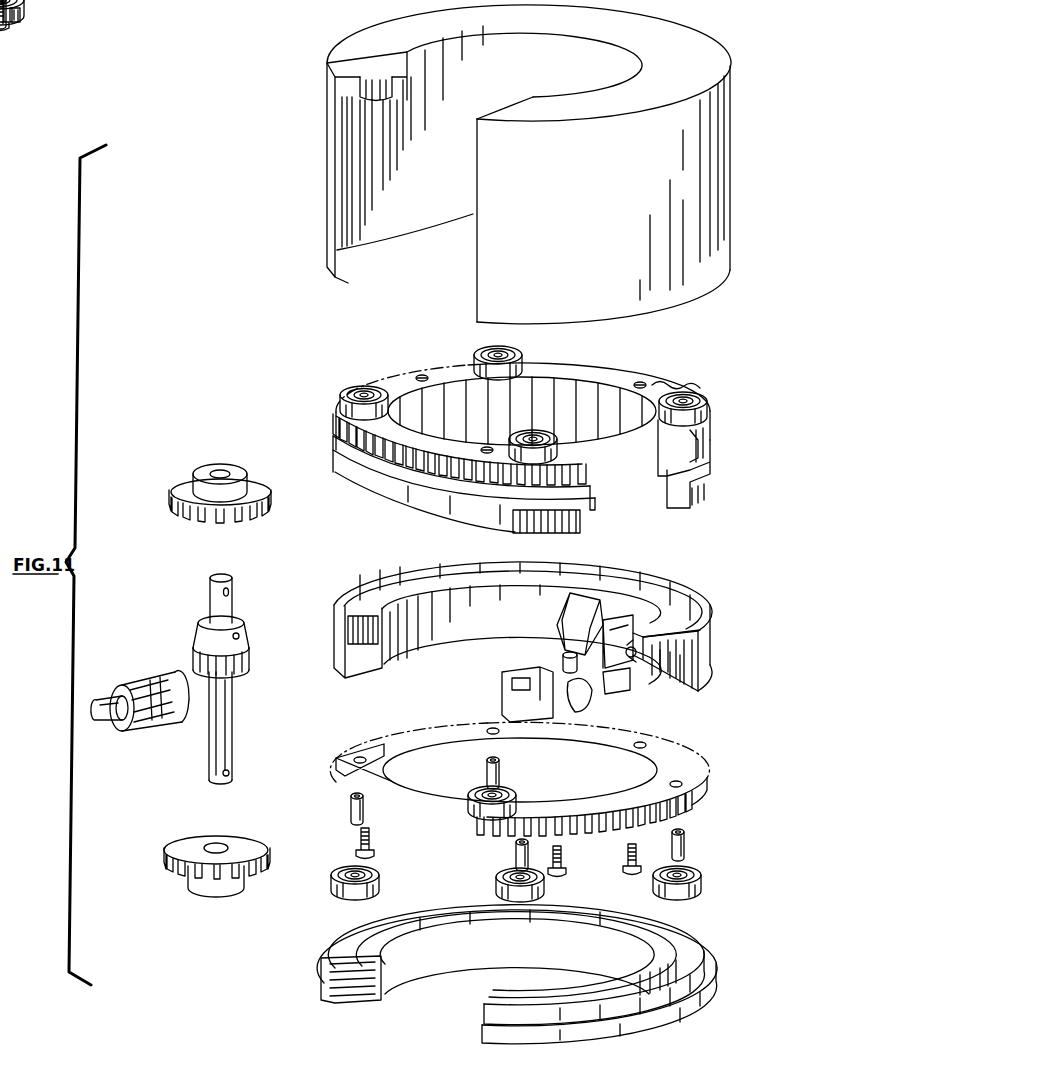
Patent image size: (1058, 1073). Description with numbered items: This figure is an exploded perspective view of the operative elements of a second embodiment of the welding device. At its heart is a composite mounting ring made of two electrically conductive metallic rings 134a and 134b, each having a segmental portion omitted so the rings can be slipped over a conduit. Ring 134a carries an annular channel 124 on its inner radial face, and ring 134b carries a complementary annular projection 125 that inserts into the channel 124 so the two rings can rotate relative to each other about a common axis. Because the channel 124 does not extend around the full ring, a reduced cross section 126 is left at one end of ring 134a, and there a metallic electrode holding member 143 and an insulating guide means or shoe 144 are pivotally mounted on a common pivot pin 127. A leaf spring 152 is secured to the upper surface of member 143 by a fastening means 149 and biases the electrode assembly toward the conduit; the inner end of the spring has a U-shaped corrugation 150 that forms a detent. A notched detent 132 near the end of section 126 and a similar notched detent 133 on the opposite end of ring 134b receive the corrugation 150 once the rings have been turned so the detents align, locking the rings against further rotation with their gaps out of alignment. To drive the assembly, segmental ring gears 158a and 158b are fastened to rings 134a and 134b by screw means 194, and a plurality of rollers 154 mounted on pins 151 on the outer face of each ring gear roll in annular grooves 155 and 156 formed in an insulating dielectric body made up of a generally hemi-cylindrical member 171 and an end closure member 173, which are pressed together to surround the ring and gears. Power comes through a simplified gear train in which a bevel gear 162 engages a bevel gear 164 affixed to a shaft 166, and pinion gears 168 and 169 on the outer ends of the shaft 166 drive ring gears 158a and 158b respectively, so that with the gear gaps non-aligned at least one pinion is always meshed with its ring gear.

The annular channel 124 is at (541, 634).
The annular projection 125 is at (471, 484).
The reduced cross section 126 is at (680, 678).
The pivot pin 127 is at (563, 660).
The notched detent 132 is at (520, 692).
The notched detent 133 is at (550, 533).
The metallic ring 134a is at (418, 650).
The metallic ring 134b is at (546, 406).
The metallic member 143 is at (612, 620).
The insulating guide means 144 is at (573, 608).
The fastening means 149 is at (629, 658).
The U-shaped corrugation 150 is at (590, 690).
The pins 151 is at (483, 772).
The leaf spring 152 is at (613, 678).
The rollers 154 is at (474, 357).
The annular groove 155 is at (340, 105).
The annular groove 156 is at (535, 974).
The segmental ring gear 158a is at (690, 769).
The segmental ring gear 158b is at (577, 368).
The bevel gear 162 is at (175, 727).
The bevel gear 164 is at (250, 654).
The shaft 166 is at (228, 720).
The pinion gear 168 is at (235, 840).
The pinion gear 169 is at (183, 513).
The hemi-cylindrical member 171 is at (503, 164).
The end closure member 173 is at (420, 963).
The screw means 194 is at (641, 380).